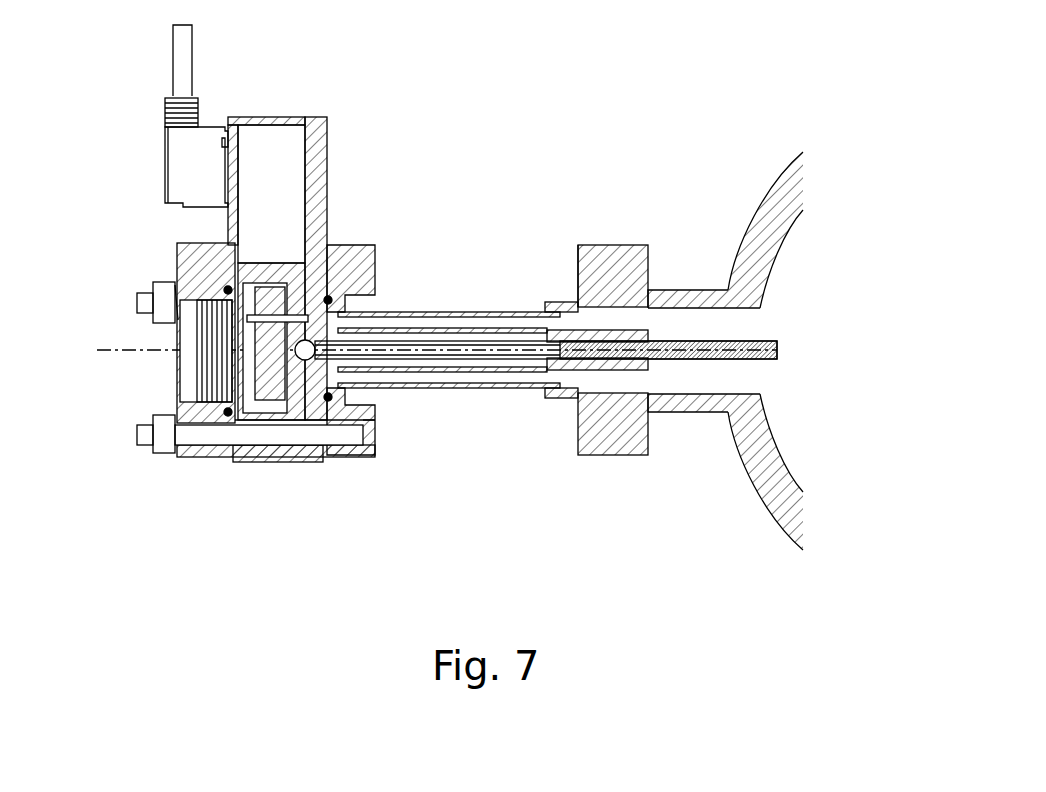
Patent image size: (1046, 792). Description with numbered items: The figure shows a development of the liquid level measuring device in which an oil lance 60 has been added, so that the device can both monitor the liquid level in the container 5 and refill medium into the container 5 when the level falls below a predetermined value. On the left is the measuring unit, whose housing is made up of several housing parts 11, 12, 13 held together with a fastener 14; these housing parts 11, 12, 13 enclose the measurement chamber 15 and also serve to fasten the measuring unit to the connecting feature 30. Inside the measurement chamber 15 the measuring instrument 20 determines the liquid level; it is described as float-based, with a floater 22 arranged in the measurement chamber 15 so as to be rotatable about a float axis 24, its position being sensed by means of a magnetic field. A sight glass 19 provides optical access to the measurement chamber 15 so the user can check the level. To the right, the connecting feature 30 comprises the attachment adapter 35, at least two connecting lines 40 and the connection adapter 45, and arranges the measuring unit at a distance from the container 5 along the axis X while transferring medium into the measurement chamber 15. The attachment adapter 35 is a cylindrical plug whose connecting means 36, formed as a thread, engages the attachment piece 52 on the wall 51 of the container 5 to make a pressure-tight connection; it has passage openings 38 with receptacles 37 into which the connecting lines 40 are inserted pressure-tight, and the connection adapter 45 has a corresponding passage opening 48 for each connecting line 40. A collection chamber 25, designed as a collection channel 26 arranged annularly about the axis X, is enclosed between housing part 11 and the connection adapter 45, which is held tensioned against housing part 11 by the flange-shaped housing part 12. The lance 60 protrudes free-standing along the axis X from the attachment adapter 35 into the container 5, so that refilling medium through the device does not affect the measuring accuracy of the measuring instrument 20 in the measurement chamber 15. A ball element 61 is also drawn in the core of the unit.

The container 5 is at (848, 330).
The housing part 11 is at (325, 117).
The housing part 12 is at (365, 262).
The housing part 13 is at (197, 273).
The fastener 14 is at (162, 300).
The measurement chamber 15 is at (227, 455).
The sight glass 19 is at (213, 365).
The measuring instrument 20 is at (258, 243).
The floater 22 is at (267, 400).
The float axis 24 is at (227, 288).
The collection chamber 25 is at (328, 443).
The collection channel 26 is at (369, 439).
The connecting feature 30 is at (534, 437).
The attachment adapter 35 is at (548, 312).
The connecting means 36 is at (580, 320).
The receptacle 37 is at (547, 327).
The passage opening 38 is at (577, 243).
The connecting lines 40 is at (440, 325).
The connection adapter 45 is at (347, 255).
The passage opening 48 is at (373, 427).
The wall 51 is at (733, 285).
The attachment piece 52 is at (597, 427).
The lance 60 is at (737, 357).
The ball 61 is at (307, 360).
The axis X is at (480, 348).